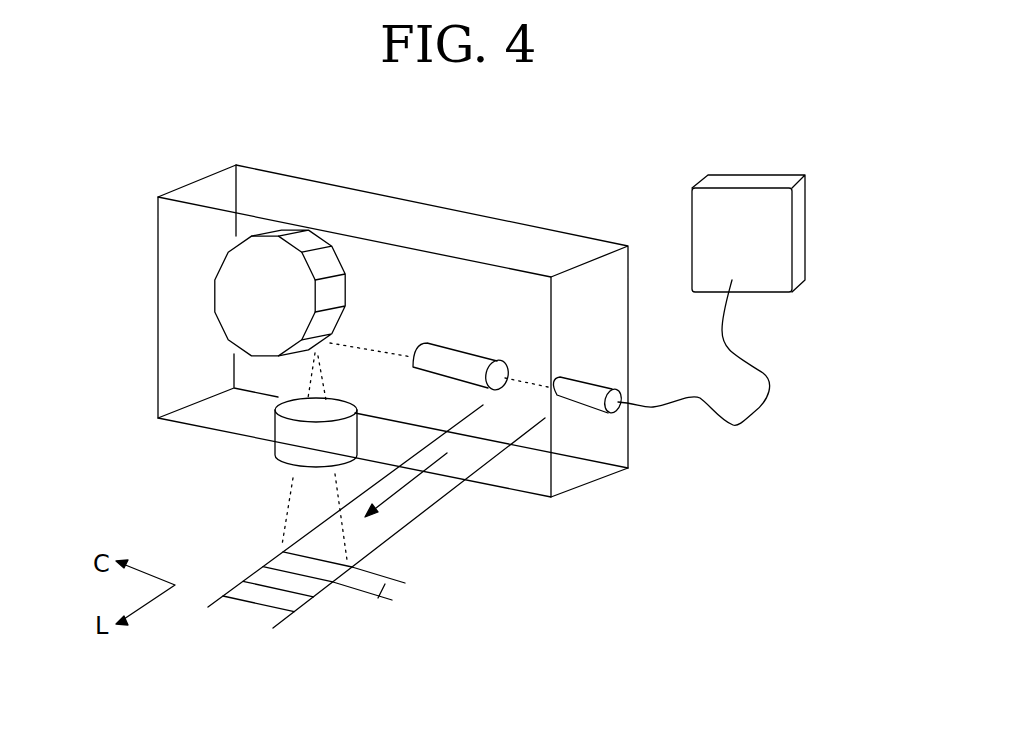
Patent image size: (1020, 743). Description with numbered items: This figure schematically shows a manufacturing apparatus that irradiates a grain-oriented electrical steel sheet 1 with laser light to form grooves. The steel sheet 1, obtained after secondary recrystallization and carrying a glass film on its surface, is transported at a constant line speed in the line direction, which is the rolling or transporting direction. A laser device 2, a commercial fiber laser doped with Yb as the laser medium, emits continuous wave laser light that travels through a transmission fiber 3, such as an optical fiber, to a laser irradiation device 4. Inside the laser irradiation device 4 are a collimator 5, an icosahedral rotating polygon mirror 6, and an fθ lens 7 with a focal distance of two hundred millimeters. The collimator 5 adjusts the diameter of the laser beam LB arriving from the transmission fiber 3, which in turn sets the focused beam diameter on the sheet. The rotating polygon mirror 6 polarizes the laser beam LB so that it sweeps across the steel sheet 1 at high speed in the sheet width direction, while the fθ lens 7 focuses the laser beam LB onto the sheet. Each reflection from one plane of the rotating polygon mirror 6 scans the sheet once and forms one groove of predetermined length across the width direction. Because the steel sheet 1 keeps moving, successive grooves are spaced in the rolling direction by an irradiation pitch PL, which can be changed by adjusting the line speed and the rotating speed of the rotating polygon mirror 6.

The steel sheet 1 is at (398, 535).
The laser device 2 is at (700, 183).
The transmission fiber 3 is at (715, 417).
The laser irradiation device 4 is at (205, 178).
The collimator 5 is at (463, 350).
The rotating polygon mirror 6 is at (227, 300).
The fθ lens 7 is at (275, 445).
The laser beam LB is at (377, 343).
The irradiation pitch PL is at (377, 592).